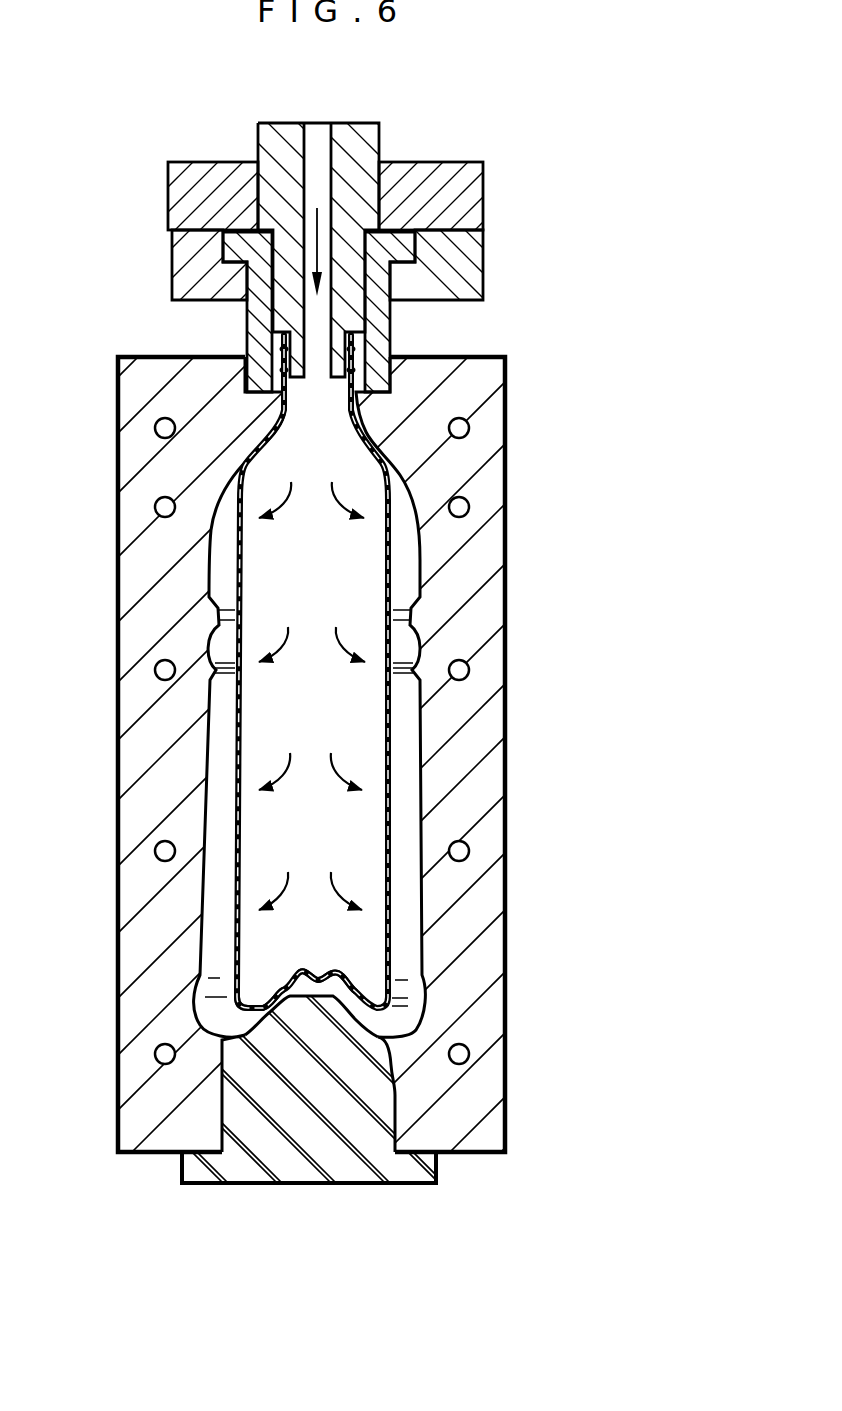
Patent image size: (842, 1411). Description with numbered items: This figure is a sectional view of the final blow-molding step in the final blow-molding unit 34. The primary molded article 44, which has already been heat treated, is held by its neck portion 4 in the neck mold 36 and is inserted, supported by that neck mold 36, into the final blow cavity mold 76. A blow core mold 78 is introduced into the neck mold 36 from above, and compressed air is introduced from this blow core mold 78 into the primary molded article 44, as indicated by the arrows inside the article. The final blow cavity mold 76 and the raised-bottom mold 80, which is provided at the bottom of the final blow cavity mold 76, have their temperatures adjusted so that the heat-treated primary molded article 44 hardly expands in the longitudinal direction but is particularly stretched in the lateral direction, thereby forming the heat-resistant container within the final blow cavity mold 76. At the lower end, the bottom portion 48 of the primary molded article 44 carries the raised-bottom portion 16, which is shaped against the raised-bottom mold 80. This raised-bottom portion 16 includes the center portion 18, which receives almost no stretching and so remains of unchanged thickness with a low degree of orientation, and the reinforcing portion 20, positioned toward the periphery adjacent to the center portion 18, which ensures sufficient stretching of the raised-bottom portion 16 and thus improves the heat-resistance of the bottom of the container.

The neck portion 4 is at (353, 348).
The raised-bottom portion 16 is at (352, 977).
The center portion 18 is at (317, 970).
The reinforcing portion 20 is at (275, 983).
The final blow-molding unit 34 is at (555, 166).
The neck mold 36 is at (383, 290).
The primary molded article 44 is at (398, 557).
The bottom portion 48 is at (243, 1022).
The final blow cavity mold 76 is at (483, 668).
The blow core mold 78 is at (363, 155).
The raised-bottom mold 80 is at (350, 1167).